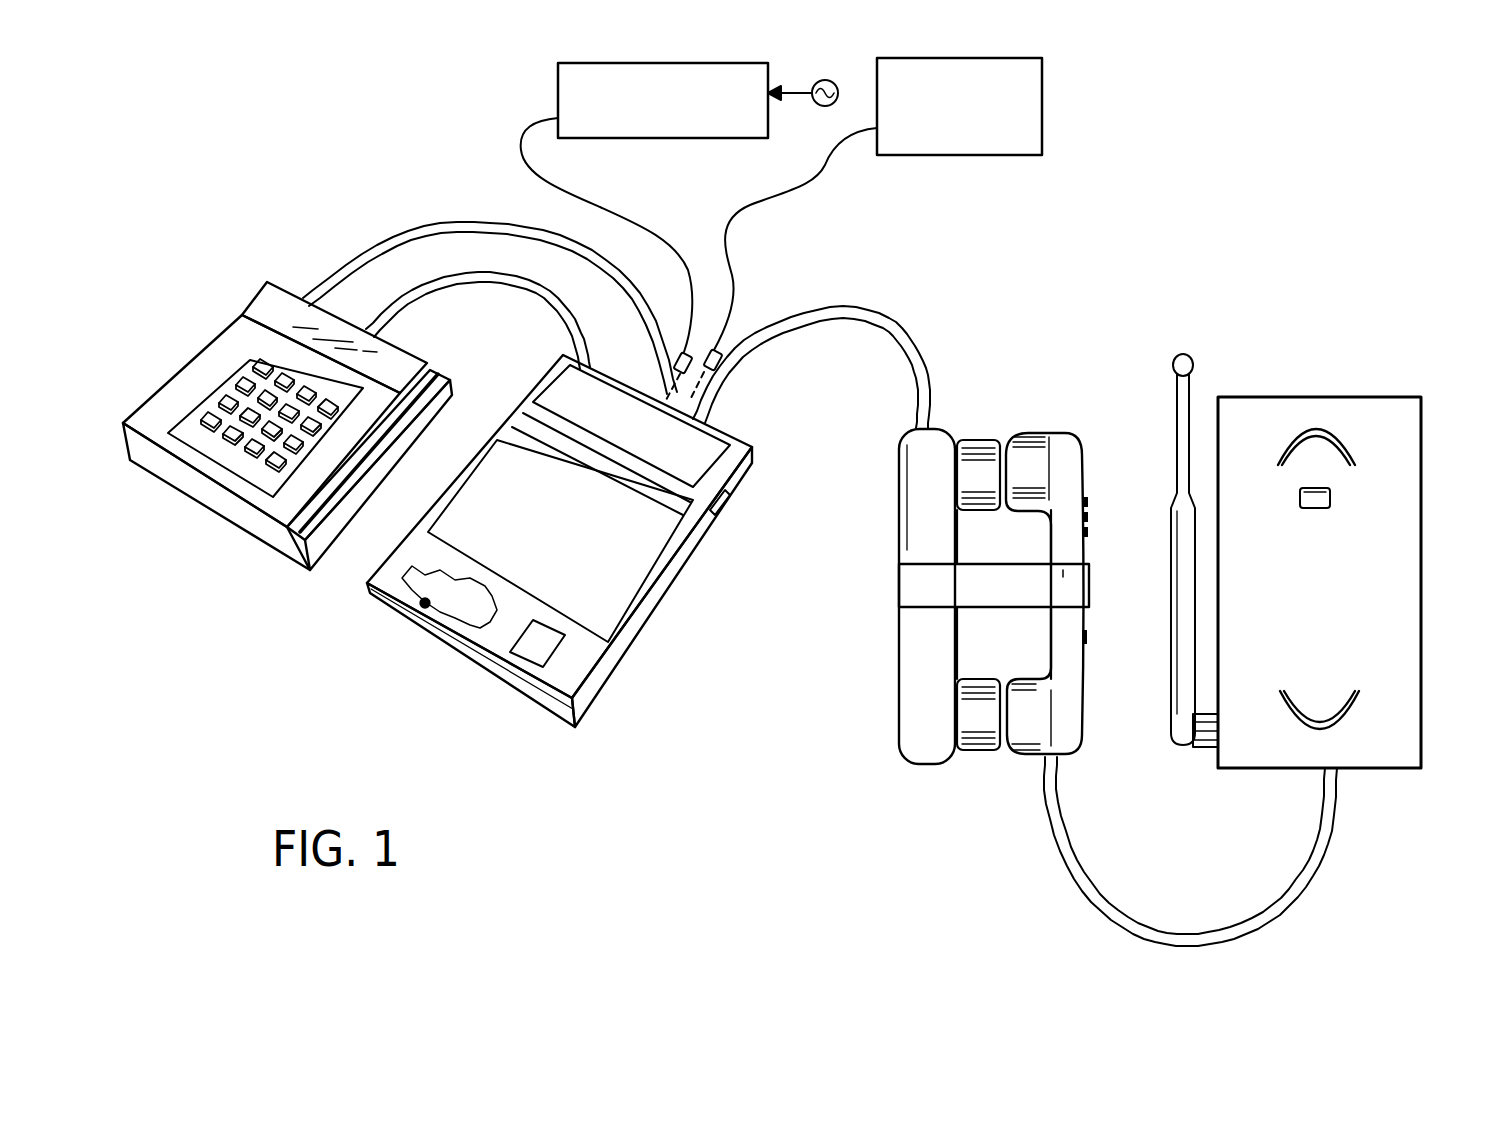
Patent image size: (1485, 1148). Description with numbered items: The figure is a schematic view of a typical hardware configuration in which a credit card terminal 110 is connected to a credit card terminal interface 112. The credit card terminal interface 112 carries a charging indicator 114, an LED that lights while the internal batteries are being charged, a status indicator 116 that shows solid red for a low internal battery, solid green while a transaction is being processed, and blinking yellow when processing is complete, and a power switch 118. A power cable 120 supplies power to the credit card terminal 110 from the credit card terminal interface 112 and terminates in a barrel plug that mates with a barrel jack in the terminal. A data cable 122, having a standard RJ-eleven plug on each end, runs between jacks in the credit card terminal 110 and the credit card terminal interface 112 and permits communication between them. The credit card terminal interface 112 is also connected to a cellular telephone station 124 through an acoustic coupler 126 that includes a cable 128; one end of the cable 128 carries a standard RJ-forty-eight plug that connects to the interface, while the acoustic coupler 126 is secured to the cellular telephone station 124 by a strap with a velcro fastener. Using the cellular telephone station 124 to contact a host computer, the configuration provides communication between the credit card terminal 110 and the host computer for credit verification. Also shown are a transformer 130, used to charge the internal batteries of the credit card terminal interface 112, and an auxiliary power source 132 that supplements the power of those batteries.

The credit card terminal 110 is at (204, 346).
The credit card terminal interface 112 is at (612, 662).
The charging indicator 114 is at (423, 606).
The status indicator 116 is at (528, 655).
The power switch 118 is at (728, 510).
The power cable 120 is at (450, 225).
The data cable 122 is at (453, 282).
The cellular telephone station 124 is at (1049, 431).
The acoustic coupler 126 is at (898, 706).
The cable 128 is at (840, 307).
The transformer 130 is at (558, 76).
The auxiliary power source 132 is at (1042, 83).